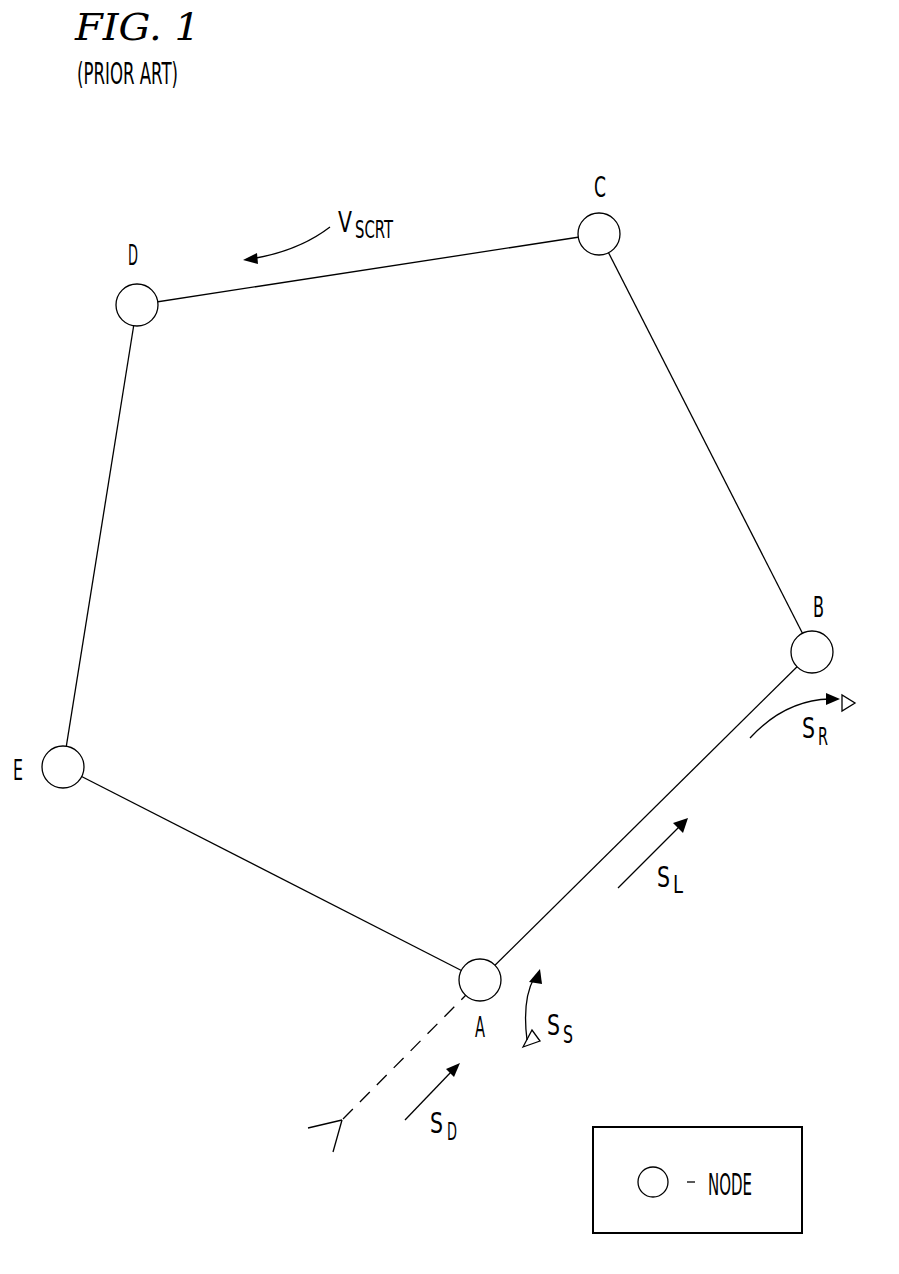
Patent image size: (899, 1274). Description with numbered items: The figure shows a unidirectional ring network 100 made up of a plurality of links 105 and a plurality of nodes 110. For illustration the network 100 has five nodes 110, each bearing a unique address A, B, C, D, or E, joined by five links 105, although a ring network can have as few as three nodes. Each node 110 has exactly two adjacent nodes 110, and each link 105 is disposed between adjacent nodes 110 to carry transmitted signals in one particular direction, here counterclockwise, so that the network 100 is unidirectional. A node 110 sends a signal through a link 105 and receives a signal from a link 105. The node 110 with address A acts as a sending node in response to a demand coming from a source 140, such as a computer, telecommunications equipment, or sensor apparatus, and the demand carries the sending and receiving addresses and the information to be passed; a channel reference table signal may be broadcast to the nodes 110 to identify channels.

The unidirectional ring network 100 is at (190, 187).
The link 105 is at (448, 264).
The node 110 is at (790, 648).
The source 140 is at (377, 1084).